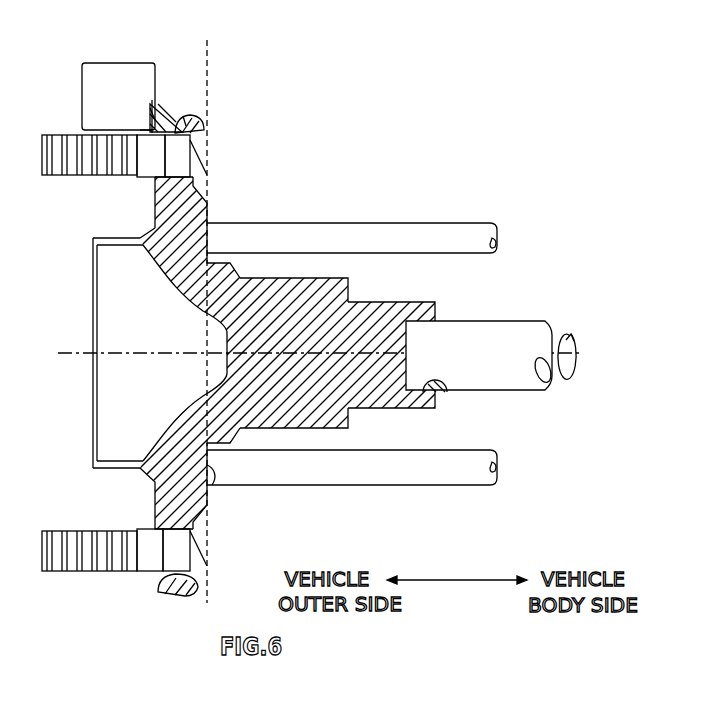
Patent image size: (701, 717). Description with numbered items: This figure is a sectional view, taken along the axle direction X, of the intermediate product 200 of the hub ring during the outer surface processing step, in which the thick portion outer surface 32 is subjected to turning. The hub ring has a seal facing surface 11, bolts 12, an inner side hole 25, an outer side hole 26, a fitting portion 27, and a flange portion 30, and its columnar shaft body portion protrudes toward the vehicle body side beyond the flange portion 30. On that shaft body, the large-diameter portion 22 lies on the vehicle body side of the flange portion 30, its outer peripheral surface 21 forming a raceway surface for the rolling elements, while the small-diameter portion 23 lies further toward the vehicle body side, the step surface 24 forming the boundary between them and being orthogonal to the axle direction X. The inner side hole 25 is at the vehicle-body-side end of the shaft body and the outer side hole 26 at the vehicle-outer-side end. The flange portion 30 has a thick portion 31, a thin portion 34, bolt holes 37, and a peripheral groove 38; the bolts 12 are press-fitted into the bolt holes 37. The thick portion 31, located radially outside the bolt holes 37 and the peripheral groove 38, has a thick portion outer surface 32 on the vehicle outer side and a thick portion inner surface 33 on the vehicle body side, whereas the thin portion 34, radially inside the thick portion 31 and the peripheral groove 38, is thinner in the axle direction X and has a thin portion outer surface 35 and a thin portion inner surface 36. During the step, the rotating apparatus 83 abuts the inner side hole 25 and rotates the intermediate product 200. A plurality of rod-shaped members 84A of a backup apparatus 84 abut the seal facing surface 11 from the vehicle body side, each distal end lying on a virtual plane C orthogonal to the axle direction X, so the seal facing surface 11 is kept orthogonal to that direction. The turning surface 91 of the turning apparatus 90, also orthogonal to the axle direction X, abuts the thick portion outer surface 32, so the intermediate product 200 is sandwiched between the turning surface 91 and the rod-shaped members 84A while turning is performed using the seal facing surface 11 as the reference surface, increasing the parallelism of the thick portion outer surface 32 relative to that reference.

The seal facing surface 11 is at (213, 486).
The bolts 12 is at (208, 160).
The outer peripheral surface 21 is at (284, 438).
The large-diameter portion 22 is at (290, 271).
The small-diameter portion 23 is at (390, 302).
The step surface 24 is at (349, 254).
The inner side hole 25 is at (445, 394).
The outer side hole 26 is at (95, 461).
The fitting portion 27 is at (96, 237).
The flange portion 30 is at (156, 106).
The thick portion 31 is at (153, 120).
The thick portion outer surface 32 is at (152, 129).
The thick portion inner surface 33 is at (187, 124).
The thin portion 34 is at (152, 209).
The thin portion outer surface 35 is at (152, 185).
The thin portion inner surface 36 is at (208, 204).
The bolt holes 37 is at (205, 127).
The peripheral groove 38 is at (151, 529).
The rotating apparatus 83 is at (529, 318).
The backup apparatus 84 is at (450, 222).
The rod-shaped members 84A is at (395, 222).
The turning apparatus 90 is at (97, 62).
The turning surface 91 is at (152, 100).
The intermediate product 200 is at (434, 316).
The virtual plane C is at (206, 82).
The axle direction X is at (457, 569).